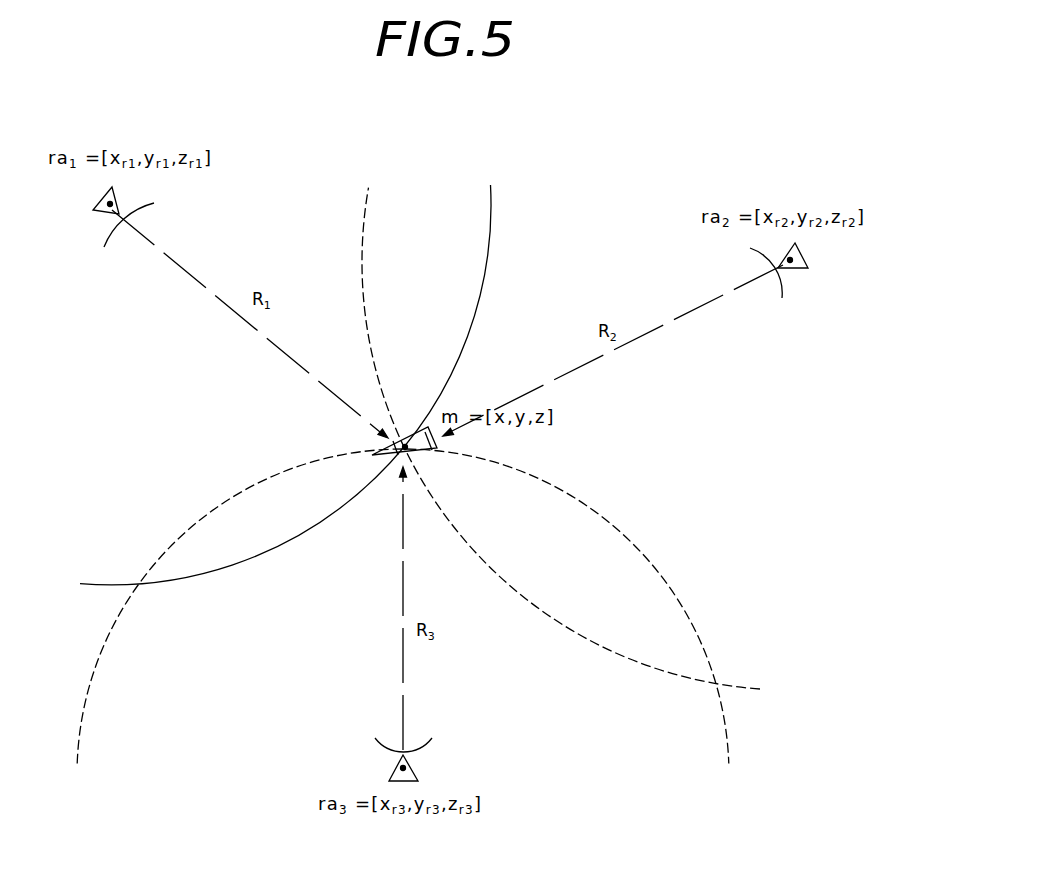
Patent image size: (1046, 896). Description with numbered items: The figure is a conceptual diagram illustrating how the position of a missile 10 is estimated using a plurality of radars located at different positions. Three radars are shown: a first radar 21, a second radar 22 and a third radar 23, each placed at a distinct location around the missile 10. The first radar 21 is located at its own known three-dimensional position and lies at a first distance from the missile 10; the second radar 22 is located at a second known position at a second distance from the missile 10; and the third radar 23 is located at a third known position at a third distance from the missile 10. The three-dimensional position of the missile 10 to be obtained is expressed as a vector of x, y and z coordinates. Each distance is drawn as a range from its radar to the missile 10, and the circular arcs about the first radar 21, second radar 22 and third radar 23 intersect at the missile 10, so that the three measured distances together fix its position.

The missile 10 is at (406, 421).
The first radar 21 is at (91, 240).
The second radar 22 is at (800, 289).
The third radar 23 is at (380, 766).